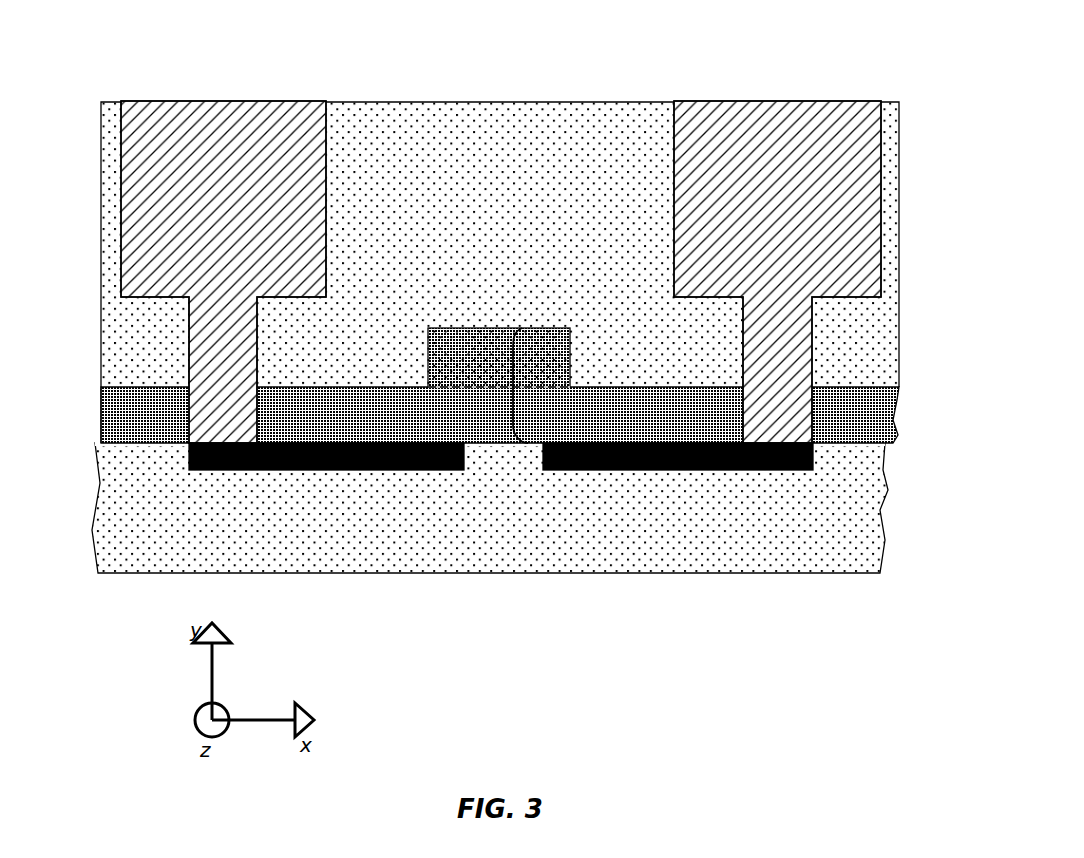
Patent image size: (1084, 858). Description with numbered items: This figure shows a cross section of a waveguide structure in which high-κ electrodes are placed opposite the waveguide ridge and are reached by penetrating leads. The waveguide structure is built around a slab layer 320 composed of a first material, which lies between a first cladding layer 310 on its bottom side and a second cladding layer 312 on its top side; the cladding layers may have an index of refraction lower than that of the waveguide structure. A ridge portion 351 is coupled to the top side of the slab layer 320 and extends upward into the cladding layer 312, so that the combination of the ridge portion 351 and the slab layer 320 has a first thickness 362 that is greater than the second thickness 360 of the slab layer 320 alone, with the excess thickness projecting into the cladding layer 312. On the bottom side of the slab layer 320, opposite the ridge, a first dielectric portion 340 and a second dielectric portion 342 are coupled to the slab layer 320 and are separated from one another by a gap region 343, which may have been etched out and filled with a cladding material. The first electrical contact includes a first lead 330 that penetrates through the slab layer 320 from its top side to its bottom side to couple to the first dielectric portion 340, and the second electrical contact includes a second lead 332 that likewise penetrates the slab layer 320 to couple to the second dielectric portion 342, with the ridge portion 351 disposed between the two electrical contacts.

The first cladding layer 310 is at (714, 584).
The second cladding layer 312 is at (391, 170).
The slab layer 320 is at (902, 396).
The first lead 330 is at (206, 101).
The second lead 332 is at (757, 101).
The first dielectric portion 340 is at (353, 473).
The second dielectric portion 342 is at (733, 473).
The gap region 343 is at (503, 460).
The ridge portion 351 is at (491, 328).
The second thickness 360 is at (101, 387).
The first thickness 362 is at (512, 408).